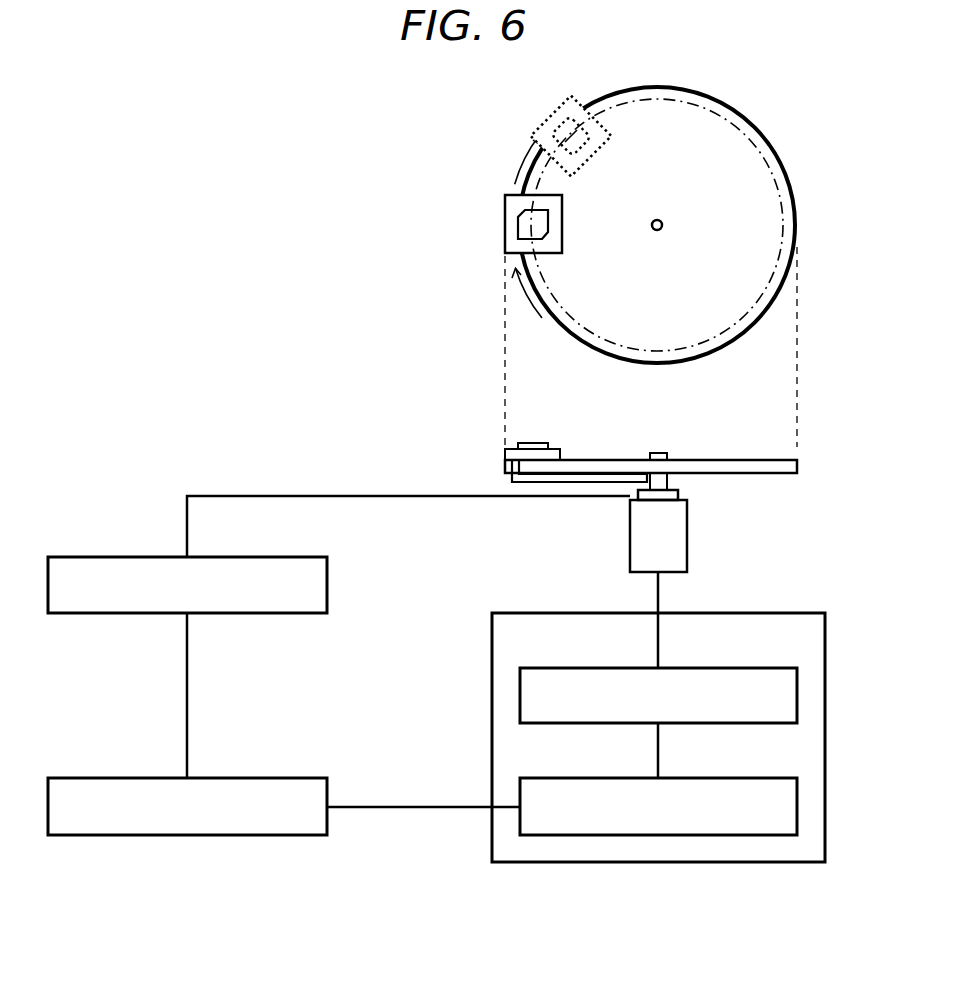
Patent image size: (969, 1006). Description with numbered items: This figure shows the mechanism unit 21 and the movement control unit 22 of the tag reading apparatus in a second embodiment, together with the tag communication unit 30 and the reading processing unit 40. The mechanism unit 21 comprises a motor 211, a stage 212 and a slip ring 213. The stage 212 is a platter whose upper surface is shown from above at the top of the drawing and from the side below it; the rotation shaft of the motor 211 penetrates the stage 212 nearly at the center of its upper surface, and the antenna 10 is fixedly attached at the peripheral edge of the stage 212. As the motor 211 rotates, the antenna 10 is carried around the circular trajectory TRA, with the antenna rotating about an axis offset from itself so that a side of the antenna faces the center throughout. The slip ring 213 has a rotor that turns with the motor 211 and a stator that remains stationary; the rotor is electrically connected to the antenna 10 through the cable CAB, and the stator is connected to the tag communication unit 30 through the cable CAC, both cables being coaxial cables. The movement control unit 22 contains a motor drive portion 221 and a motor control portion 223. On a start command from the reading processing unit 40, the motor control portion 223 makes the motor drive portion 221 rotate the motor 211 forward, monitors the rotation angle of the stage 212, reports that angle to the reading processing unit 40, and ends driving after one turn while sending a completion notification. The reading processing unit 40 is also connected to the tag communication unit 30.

The antenna 10 is at (555, 115).
The mechanism unit 21 is at (570, 533).
The movement control unit 22 is at (742, 613).
The tag communication unit 30 is at (245, 557).
The reading processing unit 40 is at (245, 778).
The motor 211 is at (687, 541).
The stage 212 is at (770, 142).
The slip ring 213 is at (678, 493).
The motor drive portion 221 is at (716, 668).
The motor control portion 223 is at (716, 778).
The circular trajectory TRA is at (782, 223).
The cable CAB is at (512, 470).
The cable CAC is at (385, 496).